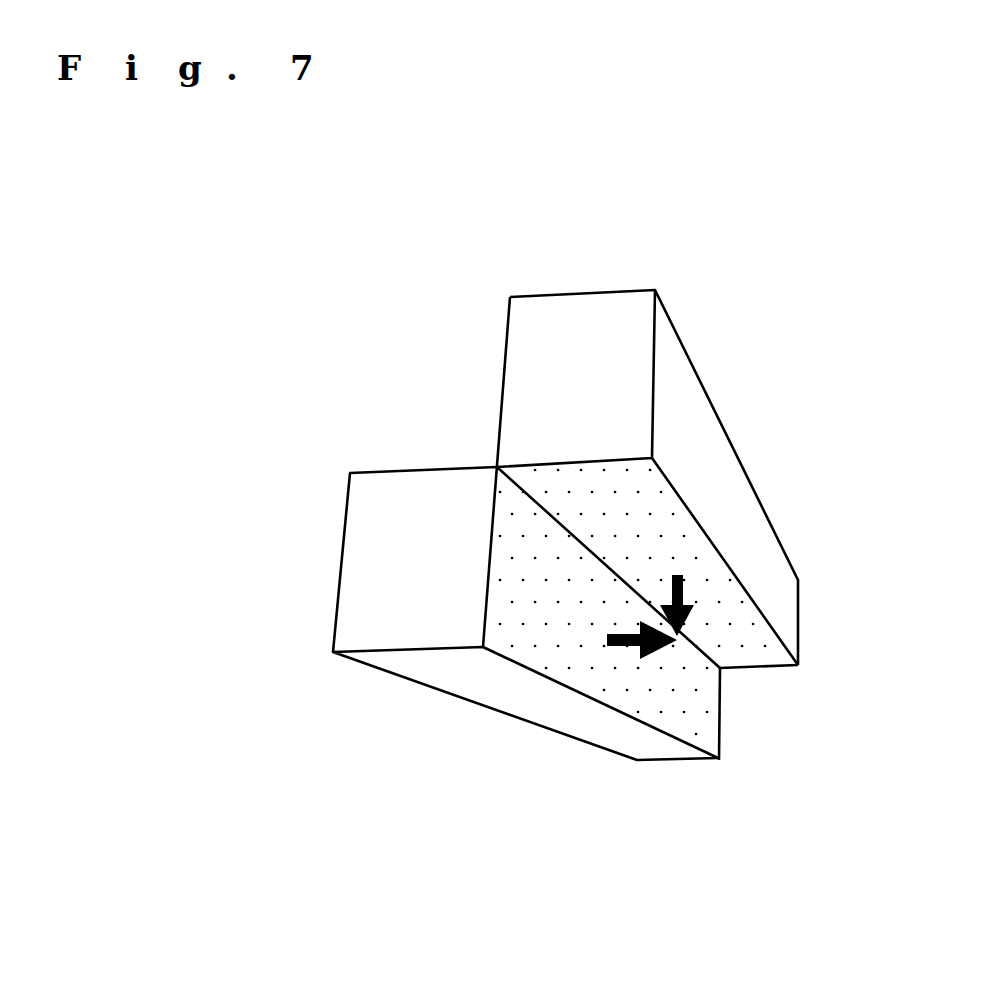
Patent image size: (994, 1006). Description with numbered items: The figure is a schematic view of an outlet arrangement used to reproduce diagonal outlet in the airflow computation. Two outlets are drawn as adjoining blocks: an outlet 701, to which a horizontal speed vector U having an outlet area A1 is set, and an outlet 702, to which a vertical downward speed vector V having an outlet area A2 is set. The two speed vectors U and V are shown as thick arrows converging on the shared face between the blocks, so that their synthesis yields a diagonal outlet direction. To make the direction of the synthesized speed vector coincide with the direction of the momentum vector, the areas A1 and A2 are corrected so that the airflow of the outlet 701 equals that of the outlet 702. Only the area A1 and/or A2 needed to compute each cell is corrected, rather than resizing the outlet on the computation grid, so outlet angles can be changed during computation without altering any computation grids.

The outlet 701 is at (342, 630).
The outlet 702 is at (678, 345).
The vertical downward speed vector V is at (683, 587).
The horizontal speed vector U is at (623, 648).
The outlet area A1 is at (720, 763).
The outlet area A2 is at (760, 668).